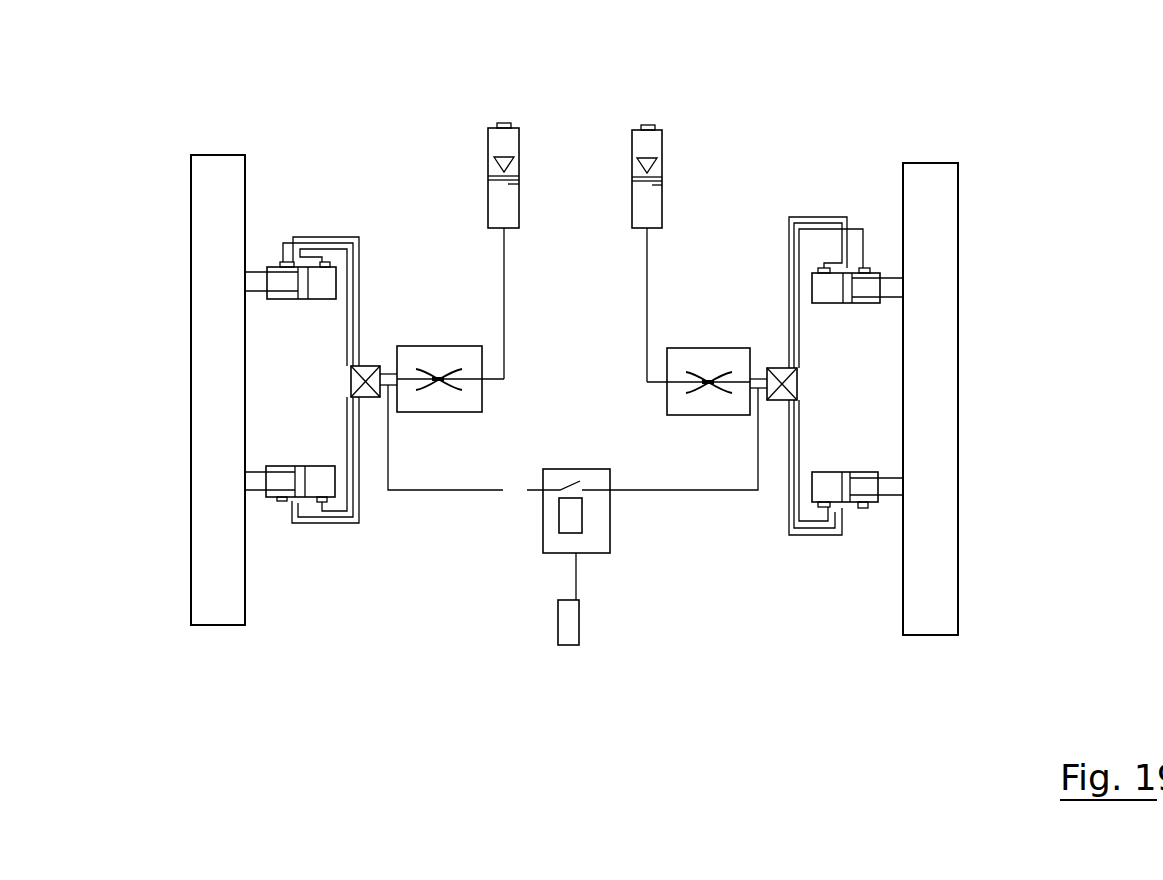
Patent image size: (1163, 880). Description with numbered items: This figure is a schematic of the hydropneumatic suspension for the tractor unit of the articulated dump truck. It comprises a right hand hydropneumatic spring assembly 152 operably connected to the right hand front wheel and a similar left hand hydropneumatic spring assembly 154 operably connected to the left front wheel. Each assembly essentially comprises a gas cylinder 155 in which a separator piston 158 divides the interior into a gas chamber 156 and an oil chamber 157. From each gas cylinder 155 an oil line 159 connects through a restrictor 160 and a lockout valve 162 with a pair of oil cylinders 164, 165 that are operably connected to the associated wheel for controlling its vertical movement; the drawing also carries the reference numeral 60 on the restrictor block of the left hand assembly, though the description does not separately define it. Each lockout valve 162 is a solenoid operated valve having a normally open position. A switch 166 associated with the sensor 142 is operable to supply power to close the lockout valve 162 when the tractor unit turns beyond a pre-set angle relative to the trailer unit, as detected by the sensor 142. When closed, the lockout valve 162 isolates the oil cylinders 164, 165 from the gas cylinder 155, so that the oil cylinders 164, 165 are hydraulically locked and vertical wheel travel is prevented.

The right hand hydropneumatic spring assembly 152 is at (792, 107).
The left hand hydropneumatic spring assembly 154 is at (420, 128).
The oil cylinder 164 is at (284, 262).
The oil cylinder 165 is at (281, 505).
The oil line 159 is at (323, 240).
The lockout valve 162 is at (351, 380).
The pump 60 is at (478, 405).
The restrictor 160 is at (723, 355).
The gas cylinder 155 is at (519, 175).
The gas chamber 156 is at (510, 140).
The separator piston 158 is at (488, 177).
The oil chamber 157 is at (488, 218).
The switch 166 is at (547, 538).
The sensor 142 is at (568, 628).